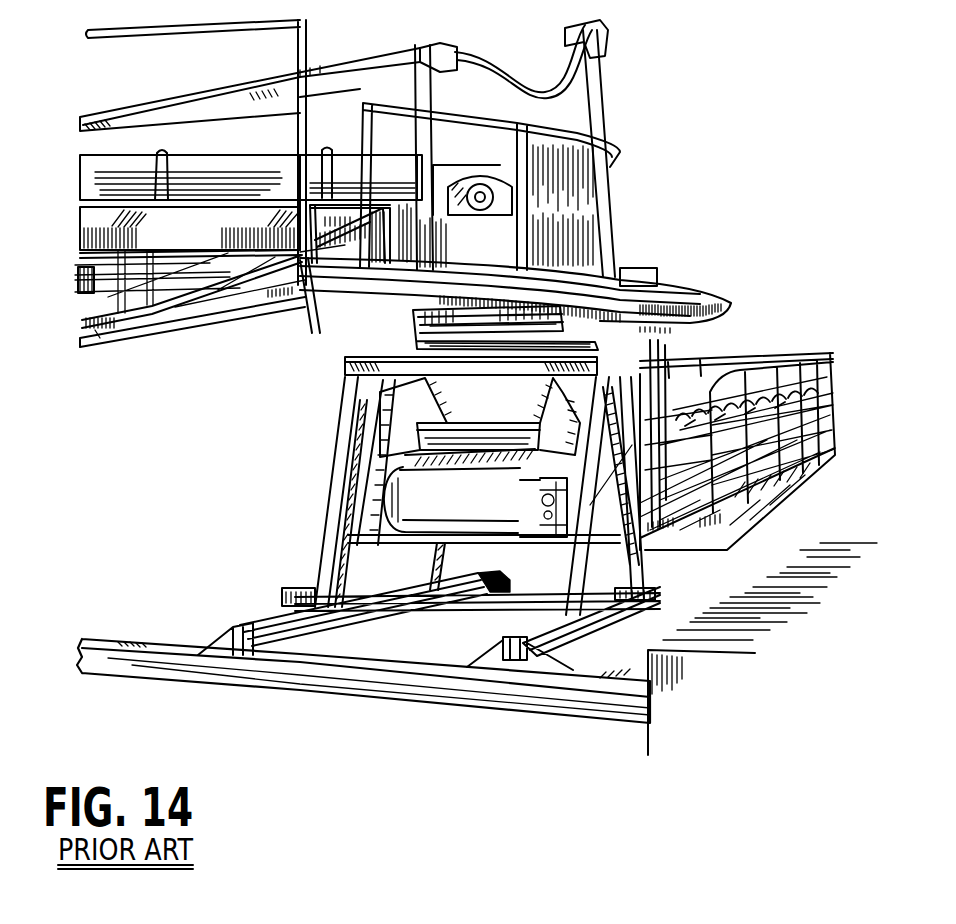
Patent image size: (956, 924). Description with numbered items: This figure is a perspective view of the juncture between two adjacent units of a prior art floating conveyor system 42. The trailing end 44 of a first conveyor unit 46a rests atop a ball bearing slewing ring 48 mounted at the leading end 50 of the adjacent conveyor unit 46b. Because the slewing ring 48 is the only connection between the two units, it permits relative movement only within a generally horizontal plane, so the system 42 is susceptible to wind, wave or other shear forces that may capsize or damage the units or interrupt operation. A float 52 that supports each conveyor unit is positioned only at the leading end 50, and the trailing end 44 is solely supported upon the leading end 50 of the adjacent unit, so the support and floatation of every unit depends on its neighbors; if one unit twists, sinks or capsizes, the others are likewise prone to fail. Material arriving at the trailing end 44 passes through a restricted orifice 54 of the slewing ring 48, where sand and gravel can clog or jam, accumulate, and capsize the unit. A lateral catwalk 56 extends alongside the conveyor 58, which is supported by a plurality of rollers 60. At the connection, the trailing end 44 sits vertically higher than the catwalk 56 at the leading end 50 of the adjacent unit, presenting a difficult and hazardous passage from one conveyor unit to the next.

The prior art system 42 is at (327, 741).
The trailing end 44 is at (612, 226).
The first conveyor unit 46a is at (178, 352).
The adjacent conveyor unit 46b is at (816, 476).
The ball bearing slewing ring 48 is at (400, 345).
The leading end 50 is at (347, 485).
The float 52 is at (730, 707).
The restricted orifice 54 is at (480, 417).
The lateral catwalk 56 is at (95, 216).
The conveyor 58 is at (195, 157).
The rollers 60 is at (480, 190).